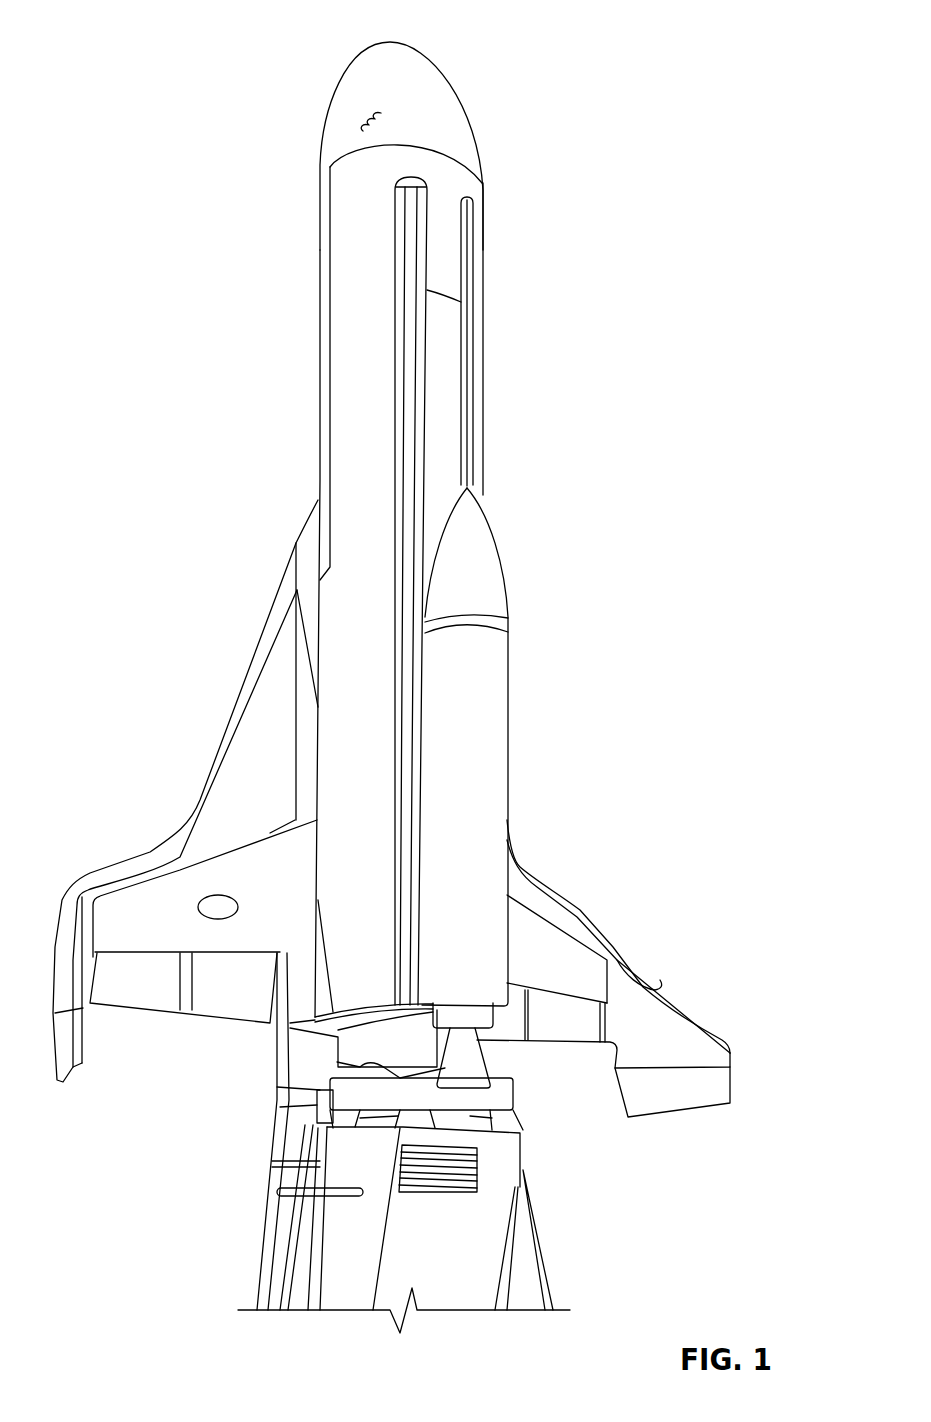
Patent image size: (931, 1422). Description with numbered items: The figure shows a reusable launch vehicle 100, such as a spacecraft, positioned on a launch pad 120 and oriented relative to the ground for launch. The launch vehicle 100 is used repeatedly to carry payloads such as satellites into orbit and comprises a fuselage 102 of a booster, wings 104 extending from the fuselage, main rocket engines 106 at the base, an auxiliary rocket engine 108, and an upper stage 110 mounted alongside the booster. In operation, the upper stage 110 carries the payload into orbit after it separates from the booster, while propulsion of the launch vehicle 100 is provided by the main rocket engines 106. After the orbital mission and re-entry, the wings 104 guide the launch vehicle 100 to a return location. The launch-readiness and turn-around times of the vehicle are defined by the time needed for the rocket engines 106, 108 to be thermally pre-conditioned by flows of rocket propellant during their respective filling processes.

The launch vehicle 100 is at (176, 38).
The fuselage 102 is at (363, 220).
The wings 104 is at (218, 893).
The main rocket engines 106 is at (335, 1122).
The auxiliary rocket engine 108 is at (465, 1060).
The upper stage 110 is at (493, 625).
The launch pad 120 is at (452, 1220).